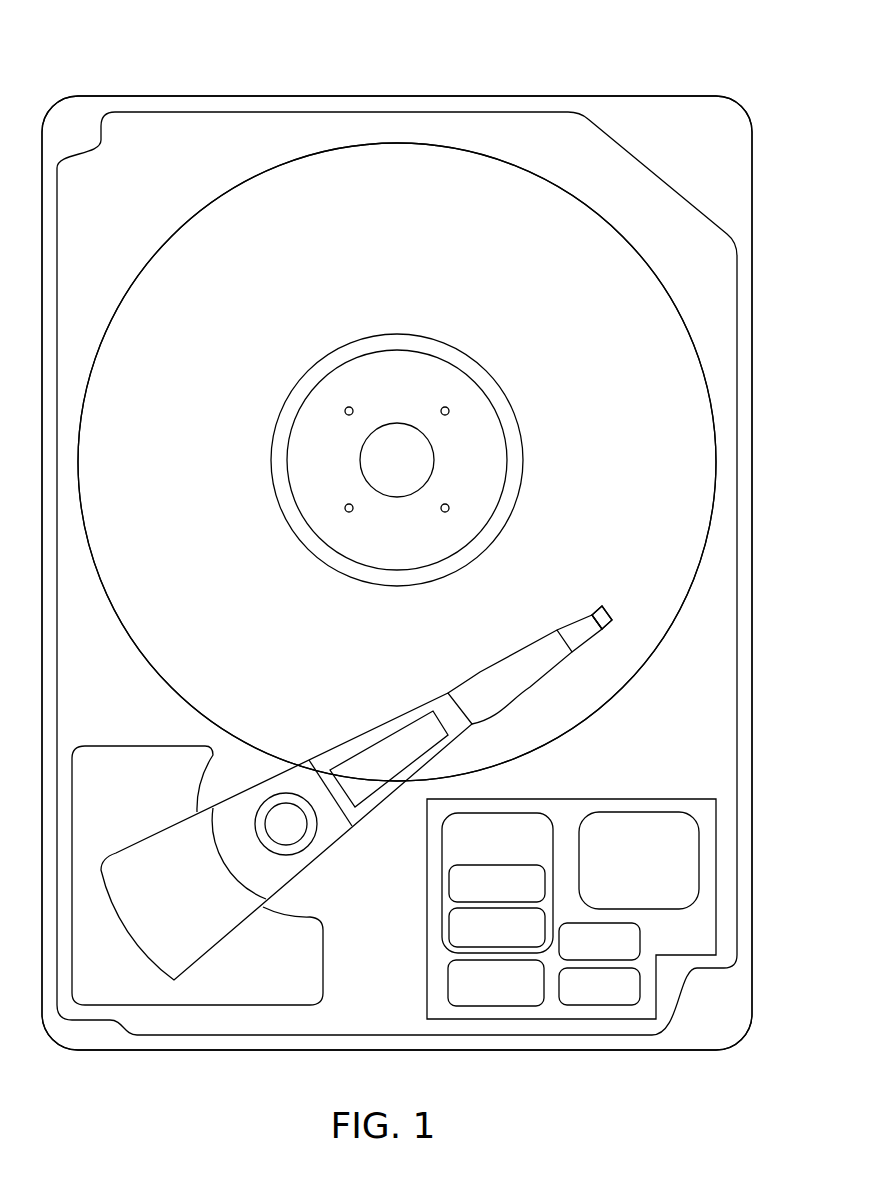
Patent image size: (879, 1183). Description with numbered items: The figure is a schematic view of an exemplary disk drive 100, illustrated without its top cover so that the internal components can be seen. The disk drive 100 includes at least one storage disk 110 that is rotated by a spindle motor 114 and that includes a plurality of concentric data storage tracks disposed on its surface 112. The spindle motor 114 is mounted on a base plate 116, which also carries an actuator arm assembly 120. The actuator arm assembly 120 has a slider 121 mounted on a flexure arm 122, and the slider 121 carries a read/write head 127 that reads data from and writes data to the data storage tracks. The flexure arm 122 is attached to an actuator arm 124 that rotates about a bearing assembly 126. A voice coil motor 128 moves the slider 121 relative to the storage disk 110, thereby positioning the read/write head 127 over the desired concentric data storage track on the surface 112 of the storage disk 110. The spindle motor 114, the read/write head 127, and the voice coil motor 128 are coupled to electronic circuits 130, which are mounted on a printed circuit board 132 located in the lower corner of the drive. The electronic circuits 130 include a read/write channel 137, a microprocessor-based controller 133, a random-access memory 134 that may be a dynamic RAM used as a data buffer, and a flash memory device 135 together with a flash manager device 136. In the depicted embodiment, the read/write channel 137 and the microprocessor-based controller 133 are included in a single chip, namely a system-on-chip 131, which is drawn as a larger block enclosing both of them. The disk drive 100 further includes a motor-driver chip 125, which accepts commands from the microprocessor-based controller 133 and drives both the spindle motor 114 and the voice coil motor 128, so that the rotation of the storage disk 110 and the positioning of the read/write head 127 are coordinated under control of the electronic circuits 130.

The disk drive 100 is at (136, 66).
The storage disk 110 is at (172, 236).
The surface 112 is at (164, 441).
The spindle motor 114 is at (496, 397).
The base plate 116 is at (738, 600).
The actuator arm assembly 120 is at (394, 710).
The slider 121 is at (612, 612).
The flexure arm 122 is at (572, 622).
The actuator arm 124 is at (470, 675).
The motor-driver chip 125 is at (478, 996).
The bearing assembly 126 is at (320, 868).
The read/write head 127 is at (600, 590).
The voice coil motor 128 is at (323, 947).
The electronic circuits 130 is at (570, 858).
The system-on-chip 131 is at (478, 856).
The printed circuit board 132 is at (652, 797).
The microprocessor-based controller 133 is at (478, 897).
The random-access memory 134 is at (581, 954).
The flash memory device 135 is at (621, 874).
The flash manager device 136 is at (581, 999).
The read/write channel 137 is at (478, 939).